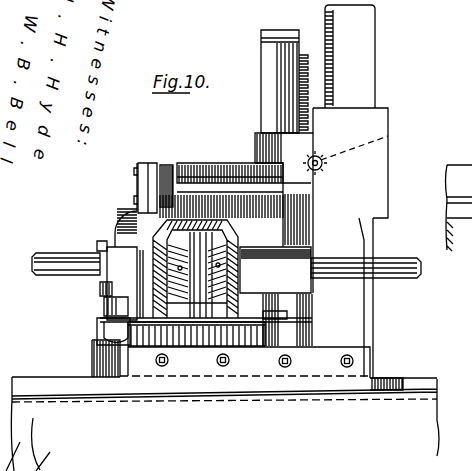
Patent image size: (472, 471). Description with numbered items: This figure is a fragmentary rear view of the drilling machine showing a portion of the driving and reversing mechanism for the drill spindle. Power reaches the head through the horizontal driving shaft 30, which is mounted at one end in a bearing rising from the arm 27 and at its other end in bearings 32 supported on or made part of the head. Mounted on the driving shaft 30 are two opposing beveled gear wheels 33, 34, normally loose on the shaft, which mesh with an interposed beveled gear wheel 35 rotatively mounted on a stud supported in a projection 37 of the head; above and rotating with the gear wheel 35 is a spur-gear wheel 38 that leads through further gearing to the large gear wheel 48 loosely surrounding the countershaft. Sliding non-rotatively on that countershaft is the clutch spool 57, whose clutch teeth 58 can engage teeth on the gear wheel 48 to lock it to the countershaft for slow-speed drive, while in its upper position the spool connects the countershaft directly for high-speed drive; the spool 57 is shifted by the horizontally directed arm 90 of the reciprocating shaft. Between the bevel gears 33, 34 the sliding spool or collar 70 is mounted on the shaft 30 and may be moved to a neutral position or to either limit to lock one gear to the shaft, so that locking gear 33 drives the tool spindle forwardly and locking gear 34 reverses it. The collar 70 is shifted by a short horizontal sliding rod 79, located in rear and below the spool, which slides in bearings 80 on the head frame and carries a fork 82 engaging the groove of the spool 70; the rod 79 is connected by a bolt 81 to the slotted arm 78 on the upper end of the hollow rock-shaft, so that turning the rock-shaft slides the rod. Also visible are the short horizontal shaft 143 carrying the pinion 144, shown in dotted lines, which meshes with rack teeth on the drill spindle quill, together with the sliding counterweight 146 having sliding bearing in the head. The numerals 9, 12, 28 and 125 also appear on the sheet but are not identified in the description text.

The shaft 9 is at (100, 250).
The work support 12 is at (466, 189).
The arm 27 is at (437, 418).
The bracket foot 28 is at (381, 243).
The driving shaft 30 is at (418, 270).
The bearings 32 is at (209, 296).
The beveled gear wheel 33 is at (240, 240).
The beveled gear wheel 34 is at (107, 247).
The interposed beveled gear wheel 35 is at (157, 211).
The projection of the head 37 is at (207, 168).
The spur-gear wheel 38 is at (175, 200).
The large gear wheel 48 is at (213, 322).
The clutch spool 57 is at (173, 296).
The clutch teeth 58 is at (185, 290).
The sliding spool or collar 70 is at (300, 247).
The arm 78 is at (113, 321).
The sliding rod 79 is at (287, 314).
The bearings 80 is at (250, 246).
The bolt 81 is at (110, 313).
The fork 82 is at (202, 322).
The horizontally directed arm 90 is at (100, 291).
The rack bar 125 is at (268, 112).
The short horizontal shaft 143 is at (322, 166).
The pinion 144 is at (388, 136).
The sliding counterweight 146 is at (364, 78).